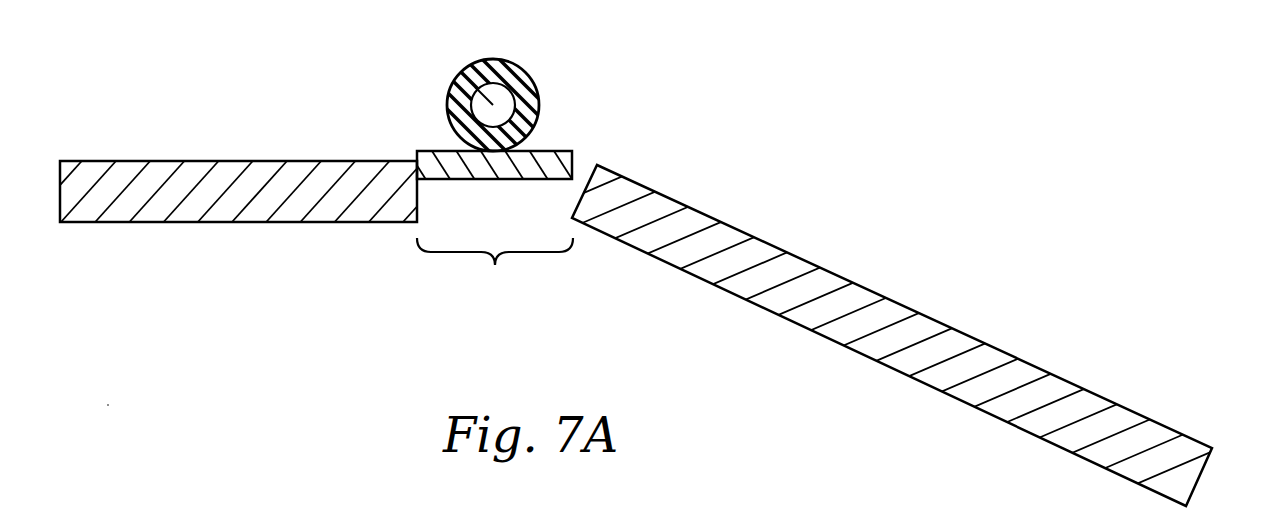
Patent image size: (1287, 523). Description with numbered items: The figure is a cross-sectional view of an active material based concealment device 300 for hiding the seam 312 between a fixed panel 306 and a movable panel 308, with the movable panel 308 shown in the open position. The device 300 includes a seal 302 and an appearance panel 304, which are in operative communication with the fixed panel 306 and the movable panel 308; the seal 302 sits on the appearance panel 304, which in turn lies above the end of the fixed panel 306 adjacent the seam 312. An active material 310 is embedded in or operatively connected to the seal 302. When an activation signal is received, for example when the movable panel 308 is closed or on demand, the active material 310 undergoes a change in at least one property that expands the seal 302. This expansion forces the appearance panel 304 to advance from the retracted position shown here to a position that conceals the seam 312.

The active material based concealment device 300 is at (1034, 152).
The seal 302 is at (541, 93).
The appearance panel 304 is at (540, 165).
The fixed panel 306 is at (165, 160).
The movable panel 308 is at (982, 340).
The active material 310 is at (472, 85).
The seam 312 is at (495, 269).